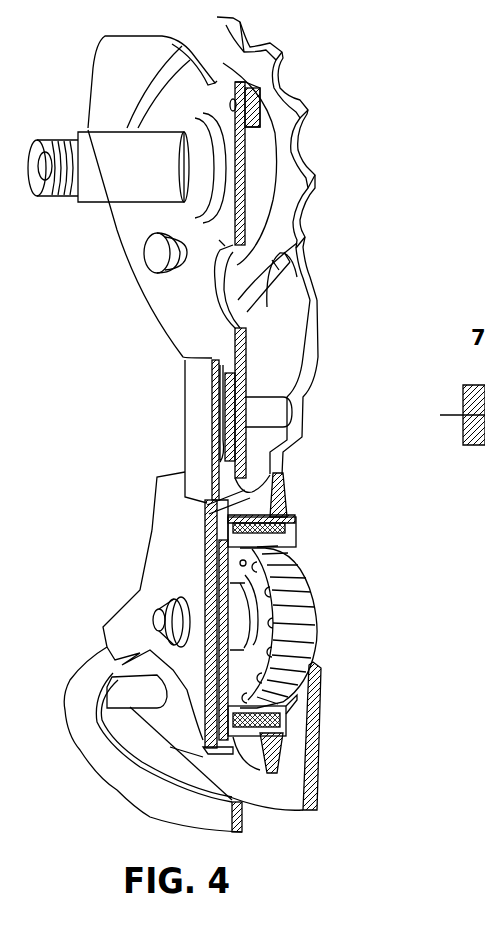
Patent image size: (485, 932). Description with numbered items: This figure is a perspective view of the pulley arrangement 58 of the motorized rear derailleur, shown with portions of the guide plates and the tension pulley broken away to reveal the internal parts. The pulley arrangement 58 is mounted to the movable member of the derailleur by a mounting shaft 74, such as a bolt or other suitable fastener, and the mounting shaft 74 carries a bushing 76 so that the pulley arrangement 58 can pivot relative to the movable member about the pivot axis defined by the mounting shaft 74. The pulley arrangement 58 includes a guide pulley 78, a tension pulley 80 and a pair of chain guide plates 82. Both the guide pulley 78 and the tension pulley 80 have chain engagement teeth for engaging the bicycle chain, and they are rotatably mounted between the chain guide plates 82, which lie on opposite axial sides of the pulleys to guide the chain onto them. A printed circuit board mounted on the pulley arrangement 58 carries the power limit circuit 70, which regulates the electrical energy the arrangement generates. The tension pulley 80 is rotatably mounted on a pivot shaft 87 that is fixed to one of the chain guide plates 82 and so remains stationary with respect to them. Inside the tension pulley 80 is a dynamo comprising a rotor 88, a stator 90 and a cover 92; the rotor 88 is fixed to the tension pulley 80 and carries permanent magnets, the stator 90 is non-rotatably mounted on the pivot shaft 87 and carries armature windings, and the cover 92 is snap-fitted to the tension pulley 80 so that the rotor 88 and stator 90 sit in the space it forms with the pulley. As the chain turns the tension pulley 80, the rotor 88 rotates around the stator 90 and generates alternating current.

The pulley arrangement 58 is at (348, 220).
The power limit circuit 70 is at (230, 426).
The mounting shaft 74 is at (62, 138).
The bushing 76 is at (130, 187).
The guide pulley 78 is at (310, 108).
The tension pulley 80 is at (278, 486).
The chain guide plates 82 is at (97, 745).
The pivot shaft 87 is at (157, 622).
The rotor 88 is at (235, 723).
The stator 90 is at (300, 597).
The cover 92 is at (217, 552).